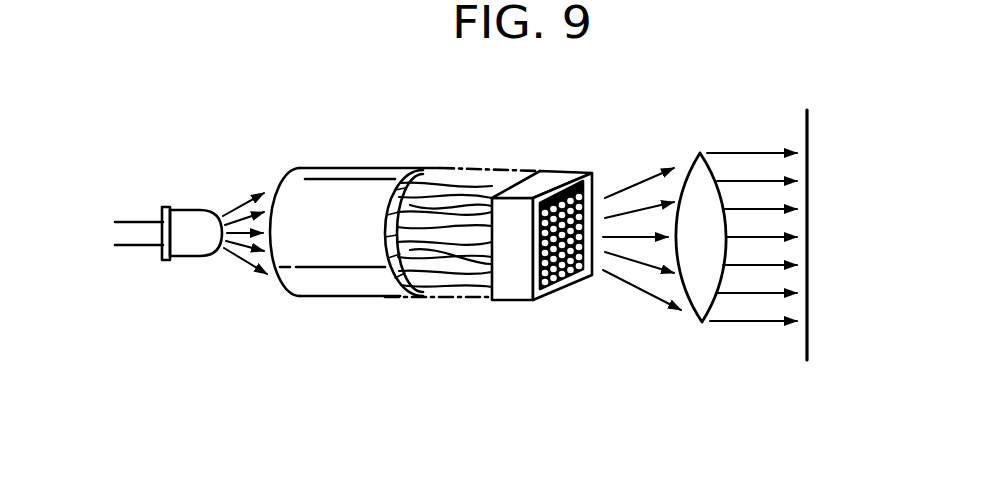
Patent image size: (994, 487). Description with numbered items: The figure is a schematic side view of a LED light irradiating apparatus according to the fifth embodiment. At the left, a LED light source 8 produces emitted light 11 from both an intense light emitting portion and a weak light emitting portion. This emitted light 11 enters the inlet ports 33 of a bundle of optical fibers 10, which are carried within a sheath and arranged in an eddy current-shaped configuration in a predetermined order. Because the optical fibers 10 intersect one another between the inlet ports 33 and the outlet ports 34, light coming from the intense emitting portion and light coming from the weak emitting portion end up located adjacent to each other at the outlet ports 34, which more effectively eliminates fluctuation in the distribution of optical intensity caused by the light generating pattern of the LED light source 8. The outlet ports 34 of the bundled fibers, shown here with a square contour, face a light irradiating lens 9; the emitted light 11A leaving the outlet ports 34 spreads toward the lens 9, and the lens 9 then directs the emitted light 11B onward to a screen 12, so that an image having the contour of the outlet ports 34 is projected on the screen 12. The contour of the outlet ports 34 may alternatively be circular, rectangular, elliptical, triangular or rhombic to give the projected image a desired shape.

The LED light source 8 is at (197, 245).
The emitted light 11 is at (237, 210).
The inlet ports 33 is at (279, 282).
The optical fibers 10 is at (455, 262).
The outlet ports 34 is at (565, 283).
The diverging light rays 11A is at (642, 290).
The light irradiating lens 9 is at (700, 158).
The parallel light rays 11B is at (757, 323).
The screen 12 is at (808, 130).